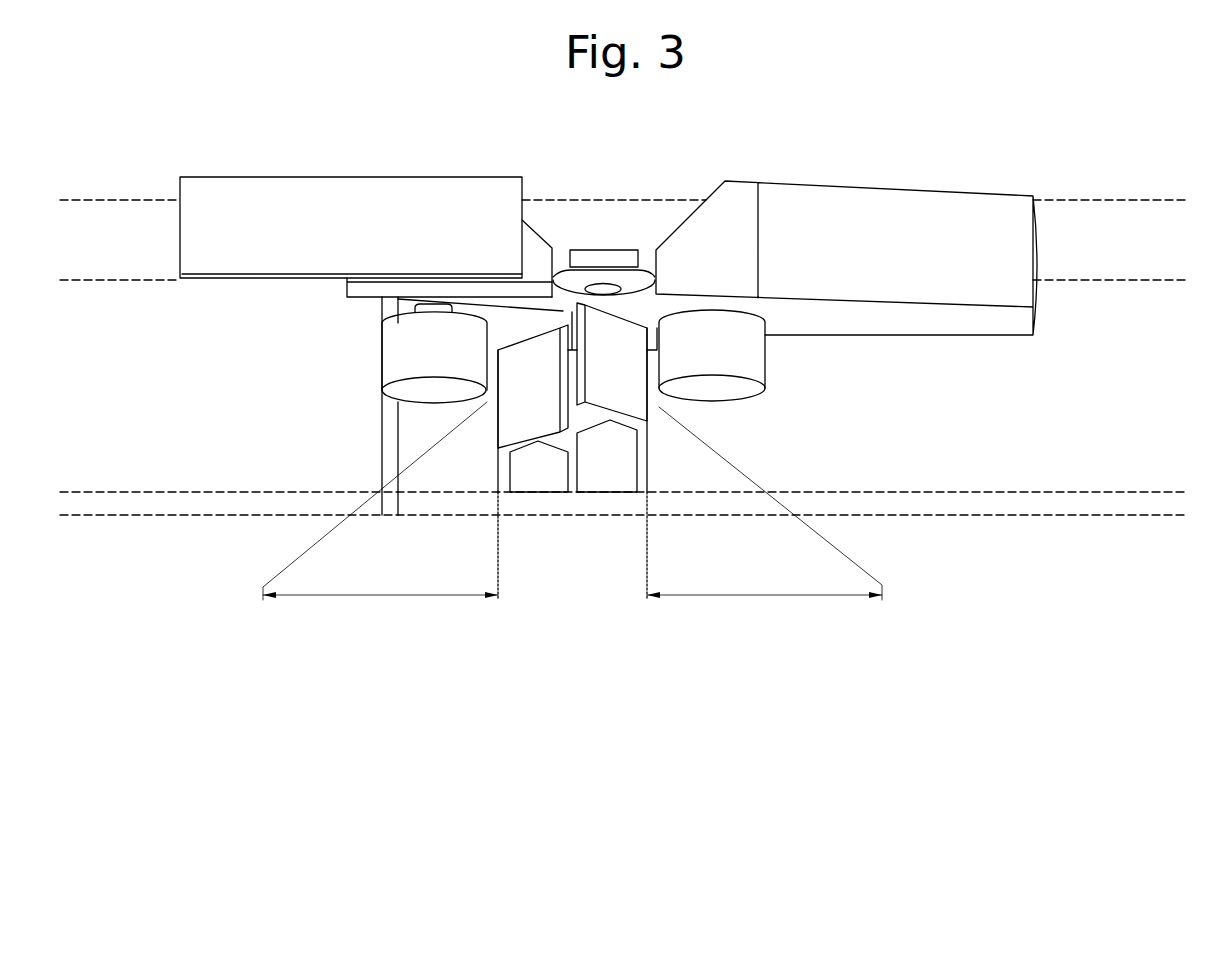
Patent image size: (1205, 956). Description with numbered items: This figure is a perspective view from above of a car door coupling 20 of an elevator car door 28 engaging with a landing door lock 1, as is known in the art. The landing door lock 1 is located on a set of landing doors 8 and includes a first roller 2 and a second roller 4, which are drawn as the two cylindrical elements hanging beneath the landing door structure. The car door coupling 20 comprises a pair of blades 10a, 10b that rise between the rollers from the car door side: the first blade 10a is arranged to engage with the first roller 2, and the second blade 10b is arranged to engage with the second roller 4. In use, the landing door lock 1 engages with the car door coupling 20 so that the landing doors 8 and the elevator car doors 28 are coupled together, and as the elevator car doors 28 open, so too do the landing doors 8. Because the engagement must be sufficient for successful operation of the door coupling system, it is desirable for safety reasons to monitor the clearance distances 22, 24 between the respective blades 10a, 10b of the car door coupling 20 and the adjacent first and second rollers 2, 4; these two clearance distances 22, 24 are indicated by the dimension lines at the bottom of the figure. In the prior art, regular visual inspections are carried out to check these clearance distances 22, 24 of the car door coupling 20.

The landing door lock 1 is at (1068, 405).
The first roller 2 is at (388, 360).
The second roller 4 is at (748, 366).
The landing doors 8 is at (1095, 222).
The first blade 10a is at (530, 478).
The second blade 10b is at (608, 483).
The car door coupling 20 is at (563, 308).
The clearance distance 22 is at (385, 597).
The clearance distance 24 is at (765, 597).
The elevator car door 28 is at (963, 507).